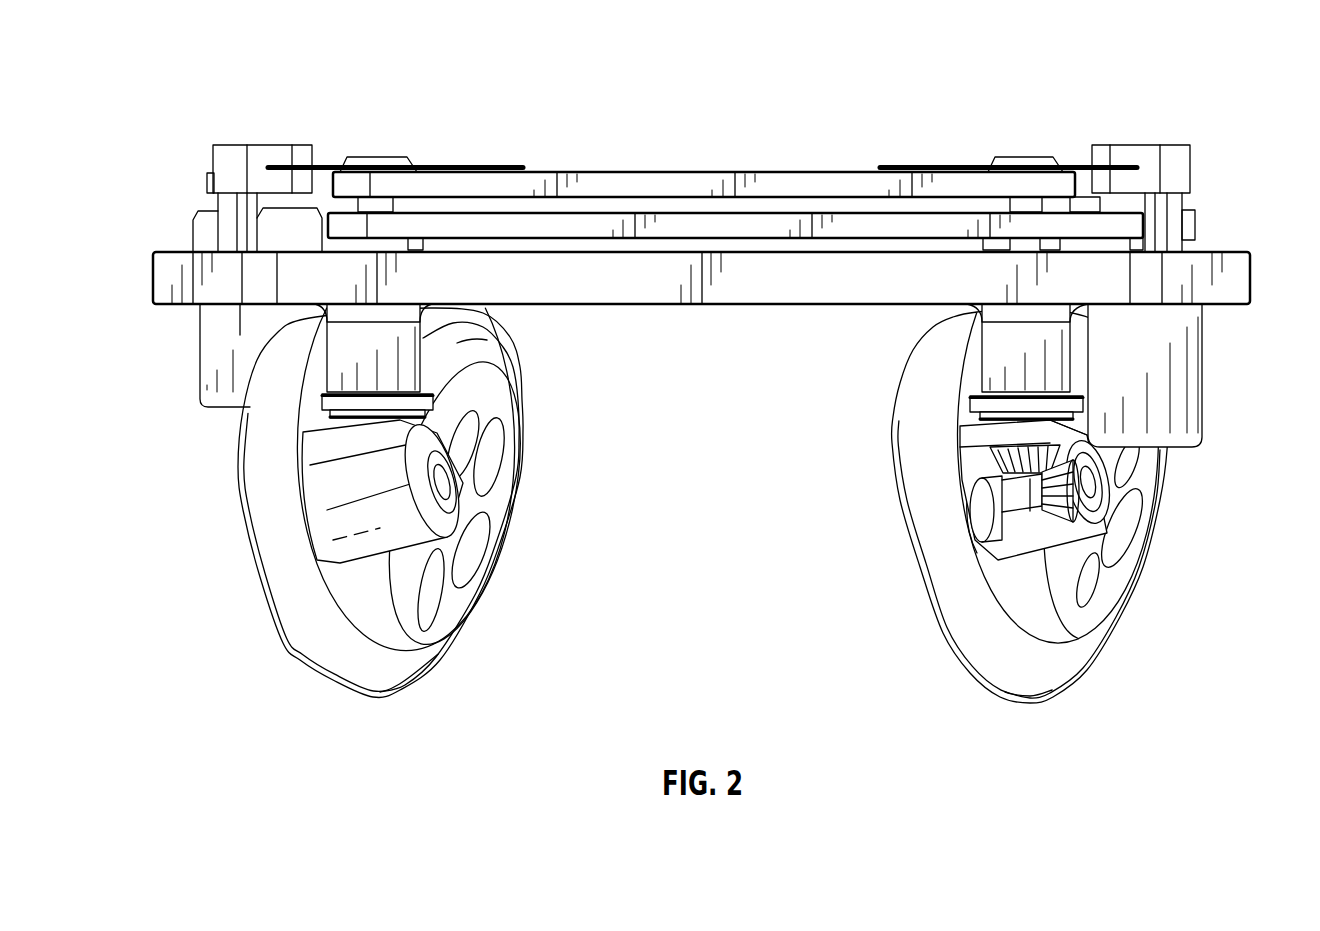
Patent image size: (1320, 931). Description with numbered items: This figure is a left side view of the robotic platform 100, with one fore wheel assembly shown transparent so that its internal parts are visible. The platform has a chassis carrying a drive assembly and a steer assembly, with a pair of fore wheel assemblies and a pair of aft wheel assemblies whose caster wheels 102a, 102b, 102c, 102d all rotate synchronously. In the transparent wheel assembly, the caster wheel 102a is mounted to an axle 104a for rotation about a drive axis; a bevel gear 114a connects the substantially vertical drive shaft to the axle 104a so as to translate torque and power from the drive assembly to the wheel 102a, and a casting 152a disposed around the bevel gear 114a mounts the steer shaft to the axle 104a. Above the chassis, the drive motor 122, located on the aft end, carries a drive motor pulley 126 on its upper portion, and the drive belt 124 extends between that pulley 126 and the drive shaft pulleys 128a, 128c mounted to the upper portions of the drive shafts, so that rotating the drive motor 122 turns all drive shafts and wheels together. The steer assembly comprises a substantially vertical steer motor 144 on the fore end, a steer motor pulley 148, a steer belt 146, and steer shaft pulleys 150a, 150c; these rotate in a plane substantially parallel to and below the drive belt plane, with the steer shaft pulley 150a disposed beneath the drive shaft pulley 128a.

The robotic platform 100 is at (984, 74).
The caster wheel 102a is at (994, 667).
The caster wheel 102b is at (1153, 468).
The caster wheel 102c is at (330, 657).
The caster wheel 102d is at (512, 400).
The axle 104a is at (1058, 450).
The bevel gear 114a is at (975, 460).
The drive motor 122 is at (211, 353).
The drive belt 124 is at (792, 184).
The drive motor pulley 126 is at (212, 203).
The drive shaft pulley 128a is at (1068, 198).
The drive shaft pulley 128c is at (418, 200).
The steer motor 144 is at (1195, 357).
The steer belt 146 is at (592, 226).
The steer motor pulley 148 is at (1185, 210).
The steer shaft pulley 150a is at (988, 250).
The steer shaft pulley 150c is at (423, 257).
The casting 152a is at (1060, 443).